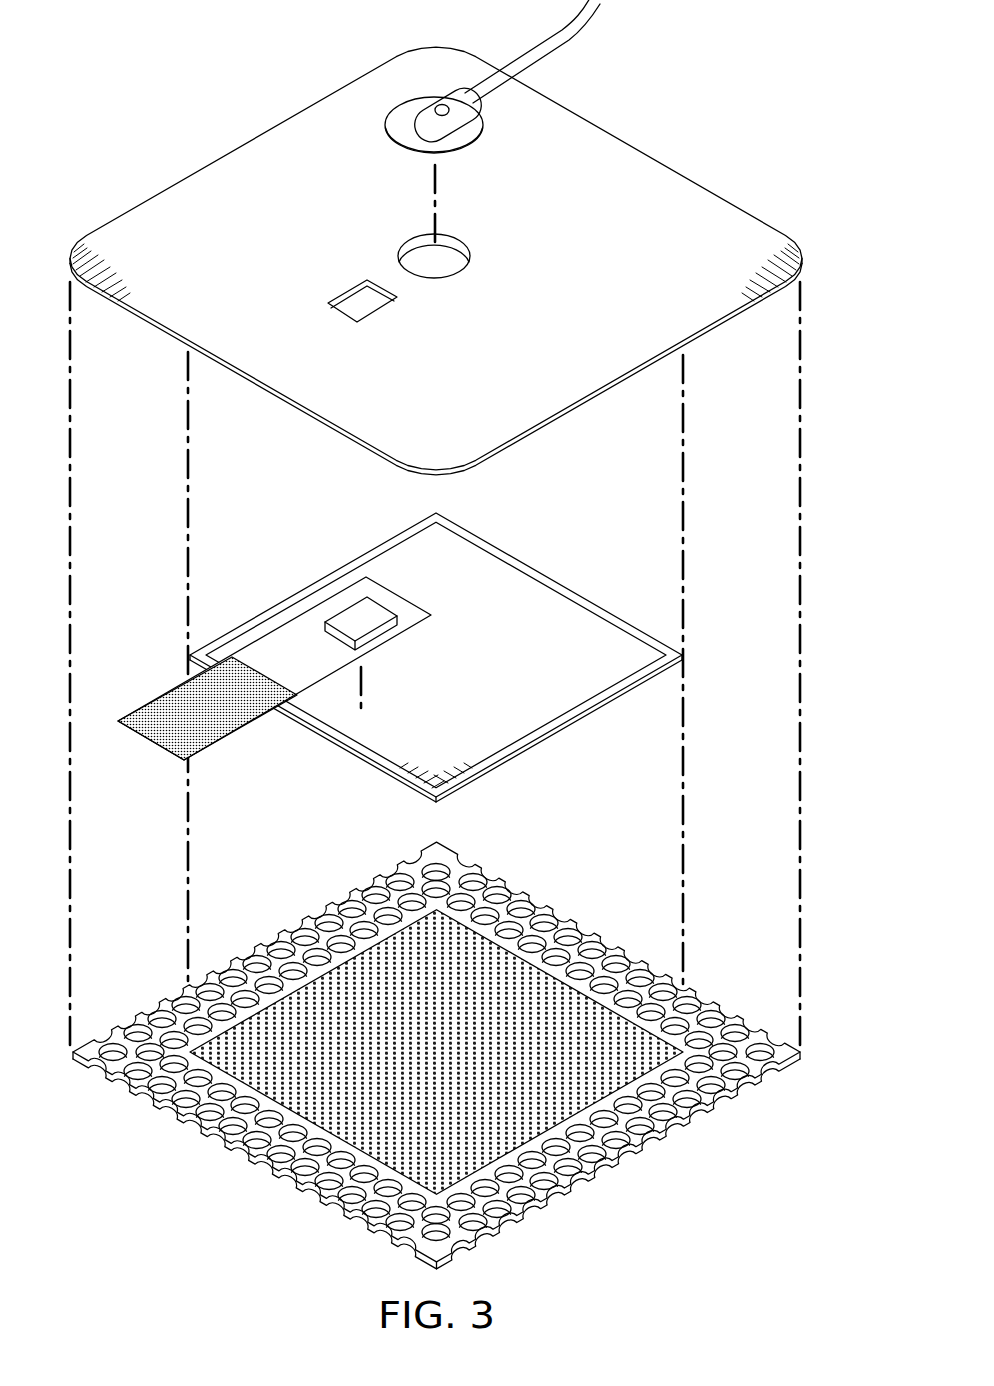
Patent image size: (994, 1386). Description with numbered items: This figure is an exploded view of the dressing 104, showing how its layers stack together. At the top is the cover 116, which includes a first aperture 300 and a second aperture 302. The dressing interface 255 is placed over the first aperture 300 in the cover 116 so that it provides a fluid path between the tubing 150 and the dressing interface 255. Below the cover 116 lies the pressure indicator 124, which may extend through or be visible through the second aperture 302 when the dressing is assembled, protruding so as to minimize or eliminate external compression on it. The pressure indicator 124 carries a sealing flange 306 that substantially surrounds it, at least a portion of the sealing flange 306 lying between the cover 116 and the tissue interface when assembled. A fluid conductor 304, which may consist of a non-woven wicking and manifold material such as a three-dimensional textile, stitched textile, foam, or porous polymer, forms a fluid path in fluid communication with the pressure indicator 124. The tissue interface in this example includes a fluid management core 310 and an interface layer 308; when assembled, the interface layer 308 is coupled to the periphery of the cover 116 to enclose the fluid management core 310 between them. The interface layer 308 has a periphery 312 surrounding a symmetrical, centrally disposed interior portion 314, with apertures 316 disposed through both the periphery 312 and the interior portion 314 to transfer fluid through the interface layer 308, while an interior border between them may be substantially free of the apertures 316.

The dressing 104 is at (237, 112).
The cover 116 is at (652, 188).
The dressing interface 255 is at (407, 110).
The cable 150 is at (590, 15).
The first aperture 300 is at (476, 240).
The second aperture 302 is at (347, 310).
The fluid management core 310 is at (567, 621).
The sealing flange 306 is at (392, 603).
The fluid conductor 304 is at (162, 692).
The pressure indicator 124 is at (343, 606).
The interface layer 308 is at (657, 1152).
The periphery 312 is at (150, 1028).
The interior portion 314 is at (325, 915).
The apertures 316 is at (477, 940).